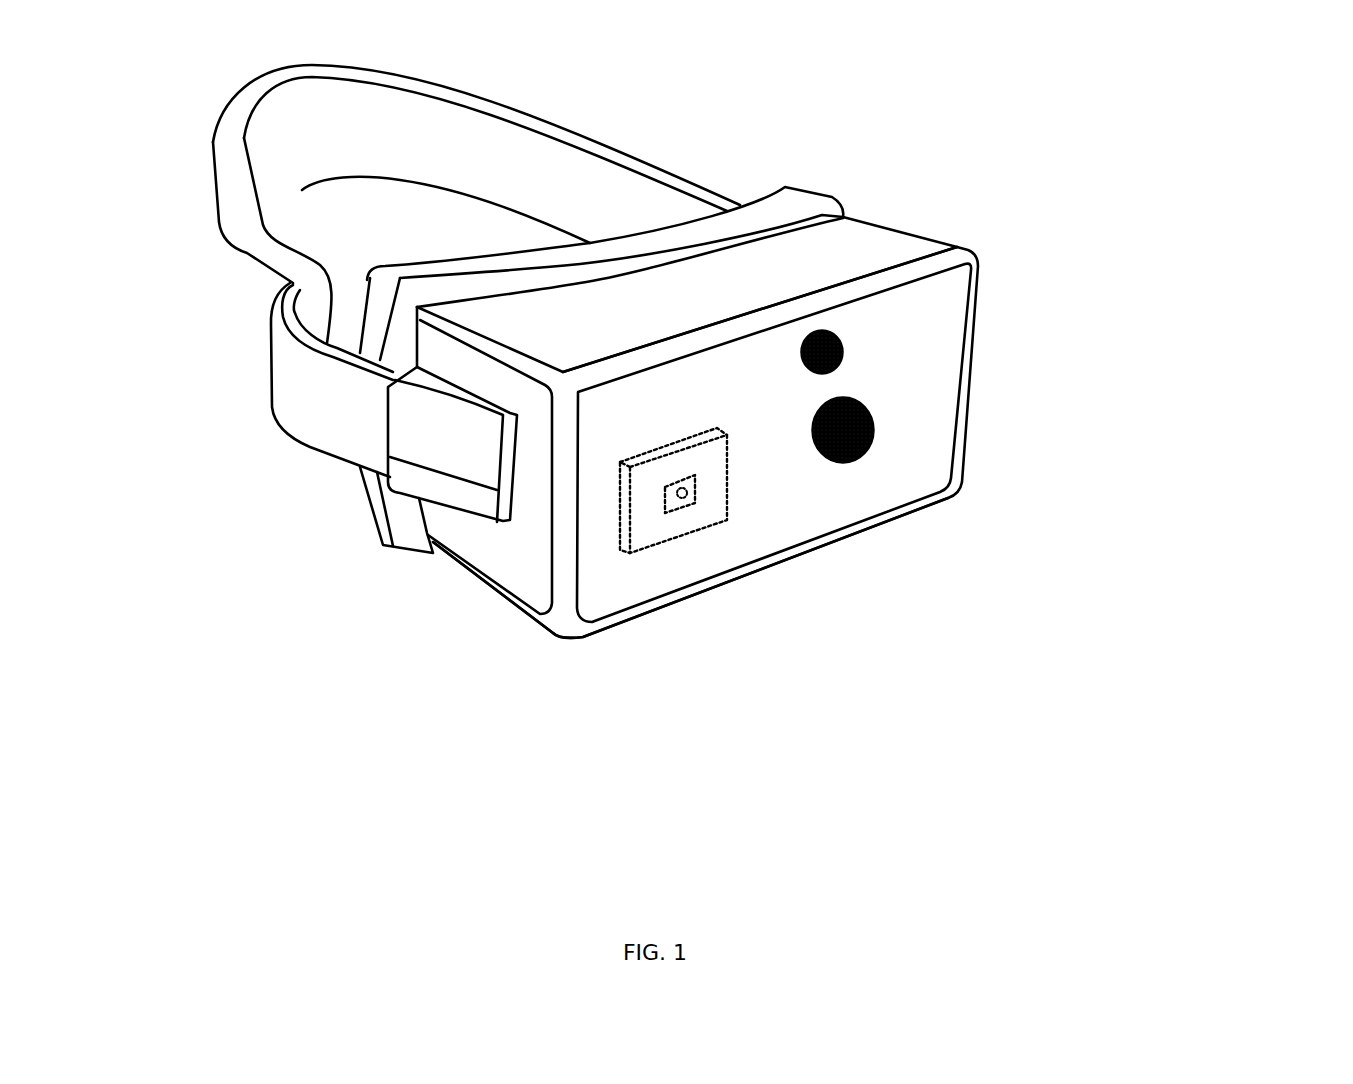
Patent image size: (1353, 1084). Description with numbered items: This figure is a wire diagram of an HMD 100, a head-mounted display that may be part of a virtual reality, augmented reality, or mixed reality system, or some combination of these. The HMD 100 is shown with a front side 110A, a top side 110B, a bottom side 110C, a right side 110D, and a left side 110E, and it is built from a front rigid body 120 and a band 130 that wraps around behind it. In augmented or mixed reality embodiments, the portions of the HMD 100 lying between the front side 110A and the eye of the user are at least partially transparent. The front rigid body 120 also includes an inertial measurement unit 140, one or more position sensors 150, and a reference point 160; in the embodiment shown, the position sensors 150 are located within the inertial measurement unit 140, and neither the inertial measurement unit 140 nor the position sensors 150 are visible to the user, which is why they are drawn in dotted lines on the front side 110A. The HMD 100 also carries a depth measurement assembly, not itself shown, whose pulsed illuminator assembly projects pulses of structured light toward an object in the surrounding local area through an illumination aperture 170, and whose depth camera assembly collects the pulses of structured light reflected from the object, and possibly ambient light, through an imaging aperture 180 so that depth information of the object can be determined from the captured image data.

The HMD 100 is at (88, 98).
The front rigid body 120 is at (975, 243).
The band 130 is at (602, 150).
The front side 110A is at (613, 576).
The top side 110B is at (520, 313).
The bottom side 110C is at (468, 598).
The right side 110D is at (520, 547).
The left side 110E is at (933, 238).
The inertial measurement unit 140 is at (728, 508).
The position sensors 150 is at (666, 508).
The reference point 160 is at (684, 498).
The illumination aperture 170 is at (843, 353).
The imaging aperture 180 is at (872, 435).